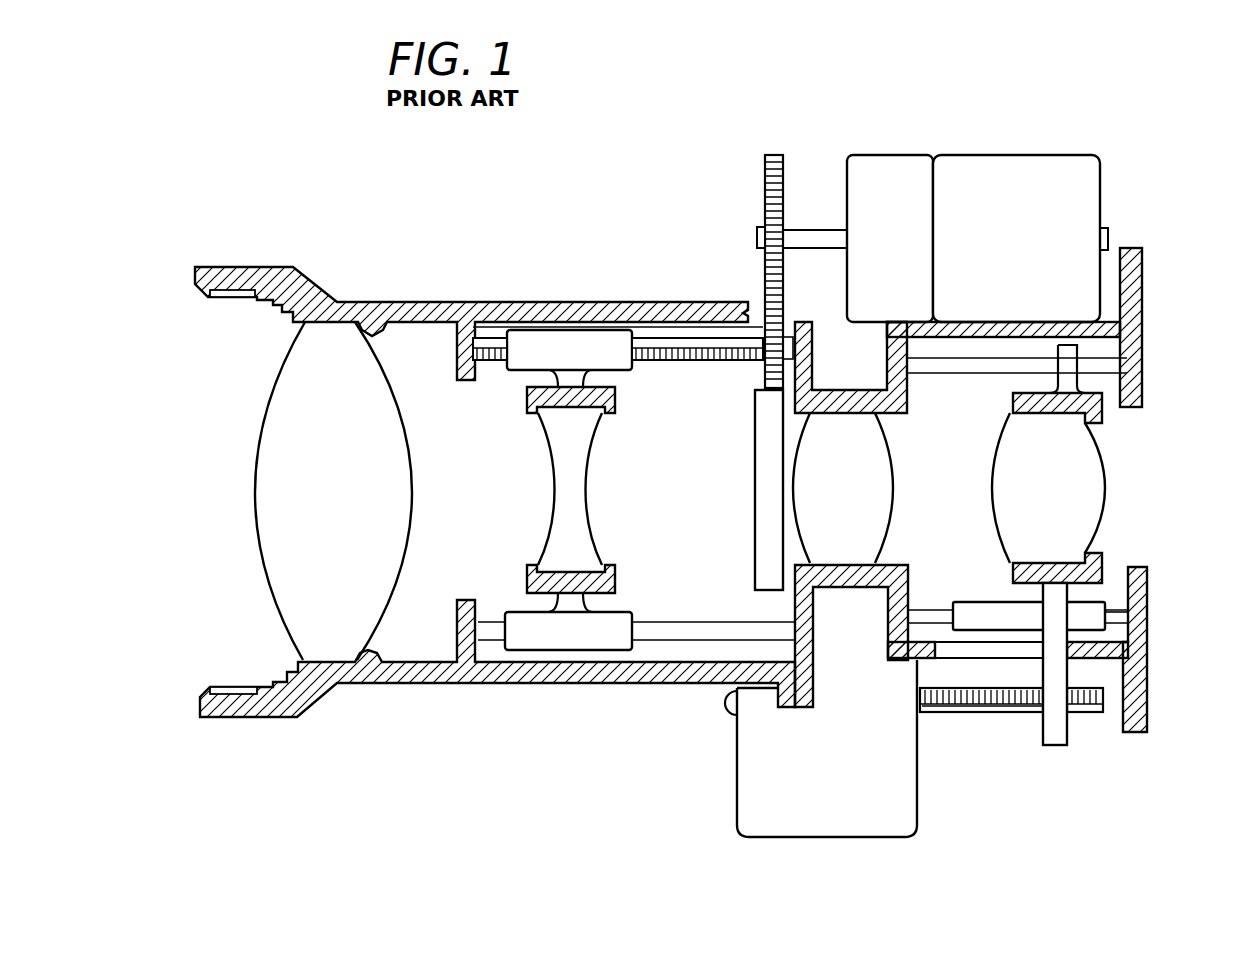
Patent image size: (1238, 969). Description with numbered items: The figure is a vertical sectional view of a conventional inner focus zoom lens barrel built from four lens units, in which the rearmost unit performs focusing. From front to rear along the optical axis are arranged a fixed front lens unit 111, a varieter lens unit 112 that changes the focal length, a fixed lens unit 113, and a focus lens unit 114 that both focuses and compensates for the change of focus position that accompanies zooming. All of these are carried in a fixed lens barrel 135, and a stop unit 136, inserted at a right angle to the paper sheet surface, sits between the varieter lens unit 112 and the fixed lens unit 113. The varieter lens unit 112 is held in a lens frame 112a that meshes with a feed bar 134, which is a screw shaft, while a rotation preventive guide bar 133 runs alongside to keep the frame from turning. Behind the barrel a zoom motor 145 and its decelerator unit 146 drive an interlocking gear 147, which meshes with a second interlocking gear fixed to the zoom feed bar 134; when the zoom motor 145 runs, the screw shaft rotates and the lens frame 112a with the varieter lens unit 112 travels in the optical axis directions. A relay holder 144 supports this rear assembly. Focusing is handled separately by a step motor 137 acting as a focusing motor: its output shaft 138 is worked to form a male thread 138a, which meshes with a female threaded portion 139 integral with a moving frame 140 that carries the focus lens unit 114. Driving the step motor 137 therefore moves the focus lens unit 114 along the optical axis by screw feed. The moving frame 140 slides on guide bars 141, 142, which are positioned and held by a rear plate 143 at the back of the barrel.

The fixed front lens unit 111 is at (272, 420).
The varieter lens unit 112 is at (557, 480).
The lens frame 112a is at (555, 345).
The fixed lens unit 113 is at (885, 488).
The focus lens unit 114 is at (1105, 472).
The rotation preventive guide bar 133 is at (680, 630).
The feed bar 134 is at (660, 345).
The fixed lens barrel 135 is at (430, 684).
The stop unit 136 is at (760, 490).
The step motor 137 is at (742, 765).
The output shaft 138 is at (978, 712).
The male thread 138a is at (1000, 712).
The female threaded portion 139 is at (1058, 745).
The moving frame 140 is at (970, 605).
The guide bar 141 is at (1120, 605).
The guide bar 142 is at (1118, 362).
The rear plate 143 is at (1140, 608).
The relay holder 144 is at (1010, 325).
The zoom motor 145 is at (1046, 152).
The decelerator unit 146 is at (910, 152).
The interlocking gear 147 is at (778, 152).